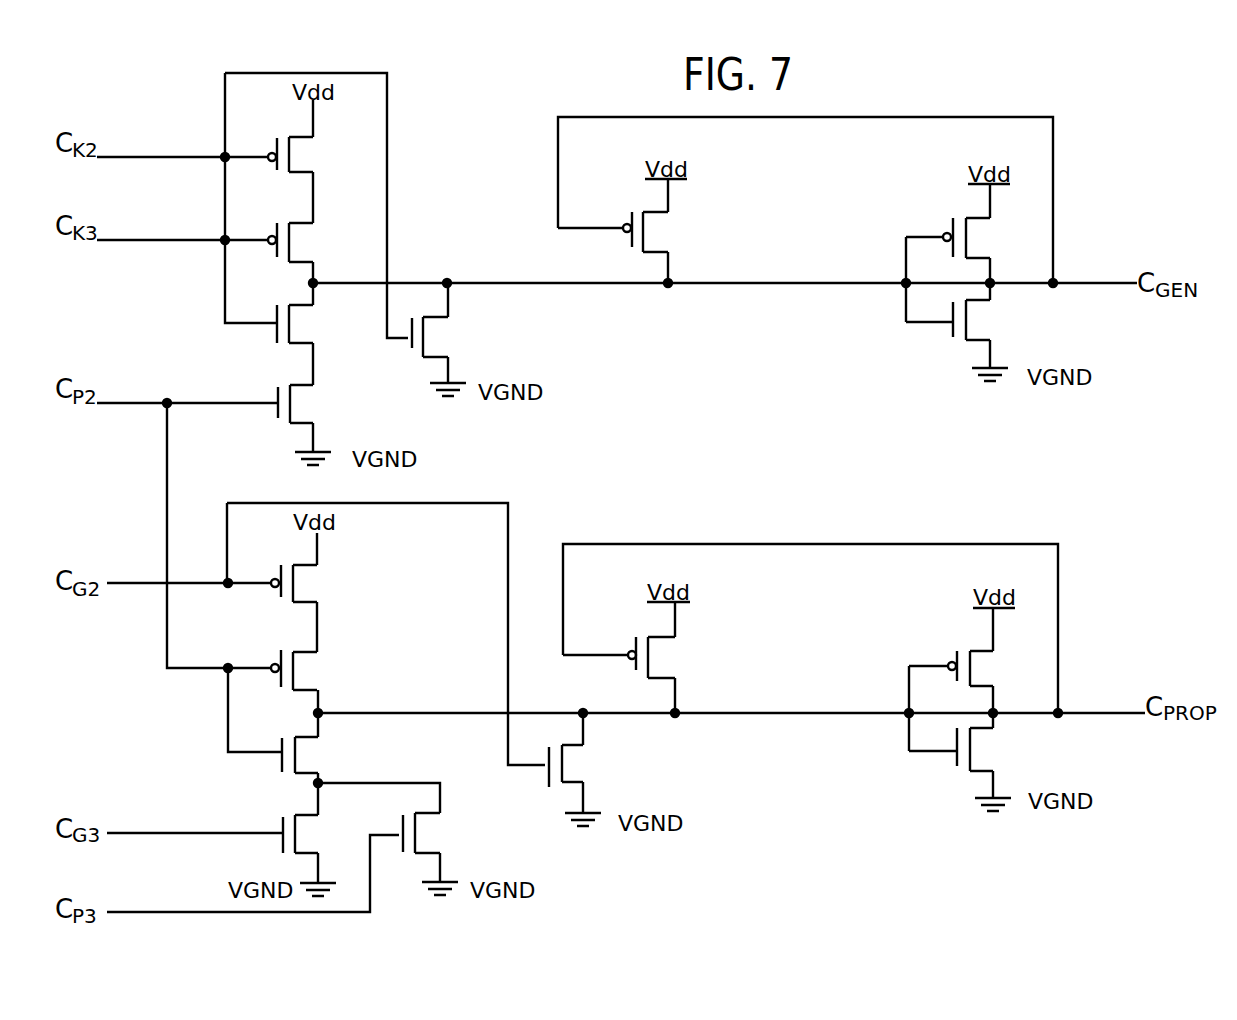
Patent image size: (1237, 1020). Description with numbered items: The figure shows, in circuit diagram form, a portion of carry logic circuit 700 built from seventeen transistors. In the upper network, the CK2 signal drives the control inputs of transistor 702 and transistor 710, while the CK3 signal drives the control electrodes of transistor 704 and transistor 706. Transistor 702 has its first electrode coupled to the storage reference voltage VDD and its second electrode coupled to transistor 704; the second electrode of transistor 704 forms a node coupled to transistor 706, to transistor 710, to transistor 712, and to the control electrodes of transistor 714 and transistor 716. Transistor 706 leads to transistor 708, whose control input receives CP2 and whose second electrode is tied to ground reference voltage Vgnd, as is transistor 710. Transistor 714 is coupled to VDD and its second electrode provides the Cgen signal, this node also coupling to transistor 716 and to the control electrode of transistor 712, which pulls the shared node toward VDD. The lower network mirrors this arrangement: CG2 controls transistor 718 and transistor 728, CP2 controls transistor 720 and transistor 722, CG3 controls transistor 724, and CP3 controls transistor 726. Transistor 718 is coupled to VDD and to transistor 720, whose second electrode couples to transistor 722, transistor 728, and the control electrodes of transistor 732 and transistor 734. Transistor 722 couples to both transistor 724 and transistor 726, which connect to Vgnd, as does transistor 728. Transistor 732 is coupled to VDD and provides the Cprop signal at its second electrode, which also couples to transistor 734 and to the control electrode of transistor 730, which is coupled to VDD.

The portion of carry logic circuit 700 is at (1070, 183).
The transistor 702 is at (277, 138).
The transistor 704 is at (277, 223).
The transistor 706 is at (277, 312).
The transistor 708 is at (285, 422).
The transistor 710 is at (418, 350).
The transistor 712 is at (632, 215).
The transistor 714 is at (953, 222).
The transistor 716 is at (953, 333).
The transistor 718 is at (281, 568).
The transistor 720 is at (281, 655).
The transistor 722 is at (282, 740).
The transistor 724 is at (283, 825).
The transistor 726 is at (410, 850).
The transistor 728 is at (555, 778).
The transistor 730 is at (636, 638).
The transistor 732 is at (957, 653).
The transistor 734 is at (957, 763).